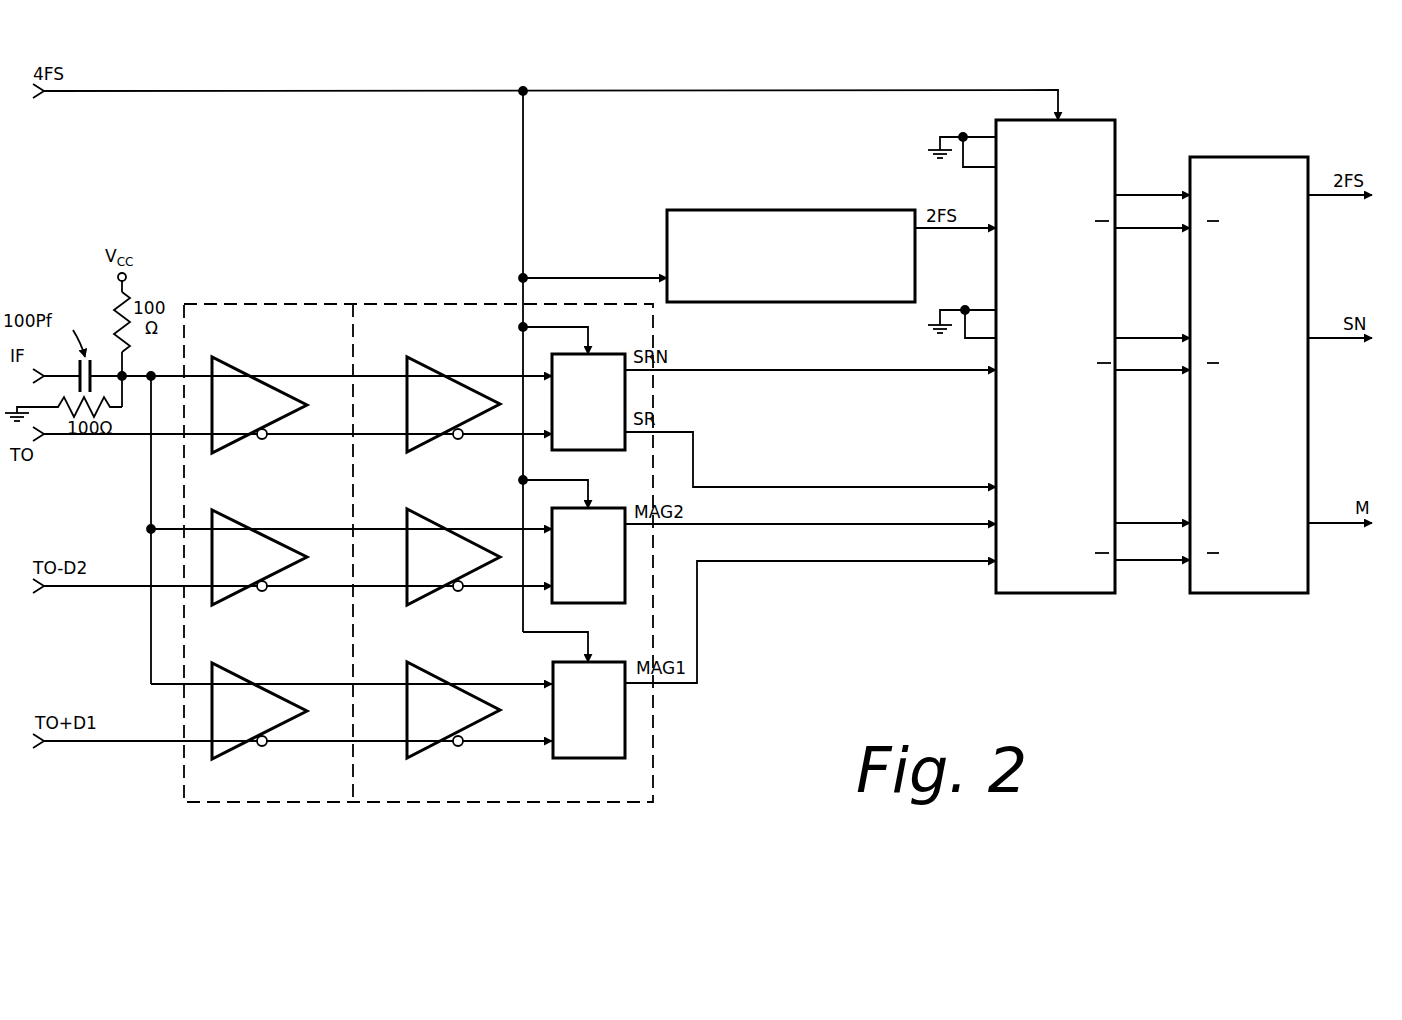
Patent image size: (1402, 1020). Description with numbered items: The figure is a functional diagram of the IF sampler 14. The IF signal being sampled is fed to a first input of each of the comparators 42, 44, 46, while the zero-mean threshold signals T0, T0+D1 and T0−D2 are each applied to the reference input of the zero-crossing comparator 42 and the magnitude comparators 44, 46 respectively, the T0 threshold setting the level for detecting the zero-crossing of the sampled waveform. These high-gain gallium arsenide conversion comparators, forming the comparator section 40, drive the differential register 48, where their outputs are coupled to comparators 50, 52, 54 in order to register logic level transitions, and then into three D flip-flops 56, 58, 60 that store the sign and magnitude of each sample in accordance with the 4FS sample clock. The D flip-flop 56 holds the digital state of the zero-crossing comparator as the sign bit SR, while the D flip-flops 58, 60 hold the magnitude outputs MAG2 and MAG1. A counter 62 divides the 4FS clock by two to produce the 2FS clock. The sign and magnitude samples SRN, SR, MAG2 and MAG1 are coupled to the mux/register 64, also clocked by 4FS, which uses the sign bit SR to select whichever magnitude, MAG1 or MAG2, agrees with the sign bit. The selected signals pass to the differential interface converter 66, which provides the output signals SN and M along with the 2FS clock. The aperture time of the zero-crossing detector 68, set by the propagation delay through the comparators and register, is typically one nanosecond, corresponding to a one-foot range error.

The IF sampler 14 is at (332, 243).
The comparators 40 is at (298, 568).
The zero-crossing comparator 42 is at (232, 363).
The magnitude comparator 44 is at (232, 518).
The magnitude comparator 46 is at (232, 672).
The differential register 48 is at (504, 563).
The comparator 50 is at (427, 363).
The comparator 52 is at (427, 516).
The comparator 54 is at (427, 670).
The D flip-flop 56 is at (606, 354).
The D flip-flop 58 is at (606, 508).
The D flip-flop 60 is at (606, 662).
The counter (divide by 2) 62 is at (745, 210).
The mux/register 64 is at (1090, 120).
The differential interface converter 66 is at (1226, 157).
The zero-crossing detector 68 is at (353, 803).